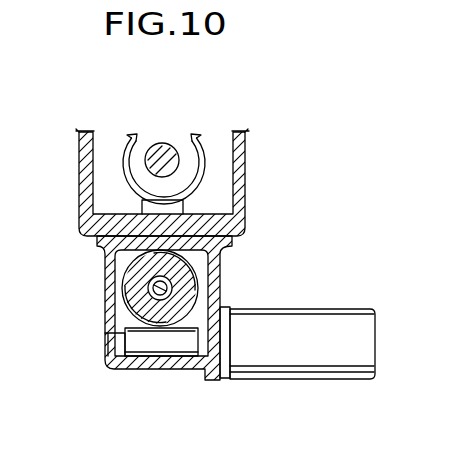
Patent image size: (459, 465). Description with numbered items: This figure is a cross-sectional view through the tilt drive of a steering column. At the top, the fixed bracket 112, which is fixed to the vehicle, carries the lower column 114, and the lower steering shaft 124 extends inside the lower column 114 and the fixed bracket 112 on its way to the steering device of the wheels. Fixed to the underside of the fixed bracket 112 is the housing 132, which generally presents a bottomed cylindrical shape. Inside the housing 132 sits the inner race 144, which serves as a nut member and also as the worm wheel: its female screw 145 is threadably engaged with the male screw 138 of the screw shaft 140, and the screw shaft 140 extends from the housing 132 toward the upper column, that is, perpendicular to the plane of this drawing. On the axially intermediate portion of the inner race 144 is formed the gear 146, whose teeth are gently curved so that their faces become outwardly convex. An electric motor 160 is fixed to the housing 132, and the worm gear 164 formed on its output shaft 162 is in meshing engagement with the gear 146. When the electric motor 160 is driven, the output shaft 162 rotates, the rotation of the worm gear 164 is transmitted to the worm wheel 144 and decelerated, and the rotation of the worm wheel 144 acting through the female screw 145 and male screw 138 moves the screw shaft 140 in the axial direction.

The fixed bracket 112 is at (245, 160).
The lower column 114 is at (123, 151).
The lower steering shaft 124 is at (168, 143).
The gear 146 is at (120, 263).
The inner race (worm wheel) 144 is at (187, 280).
The male screw 138 is at (175, 289).
The female screw 145 is at (148, 293).
The screw shaft 140 is at (132, 300).
The housing 132 is at (108, 370).
The worm gear 164 is at (137, 358).
The output shaft 162 is at (188, 342).
The electric motor 160 is at (328, 317).